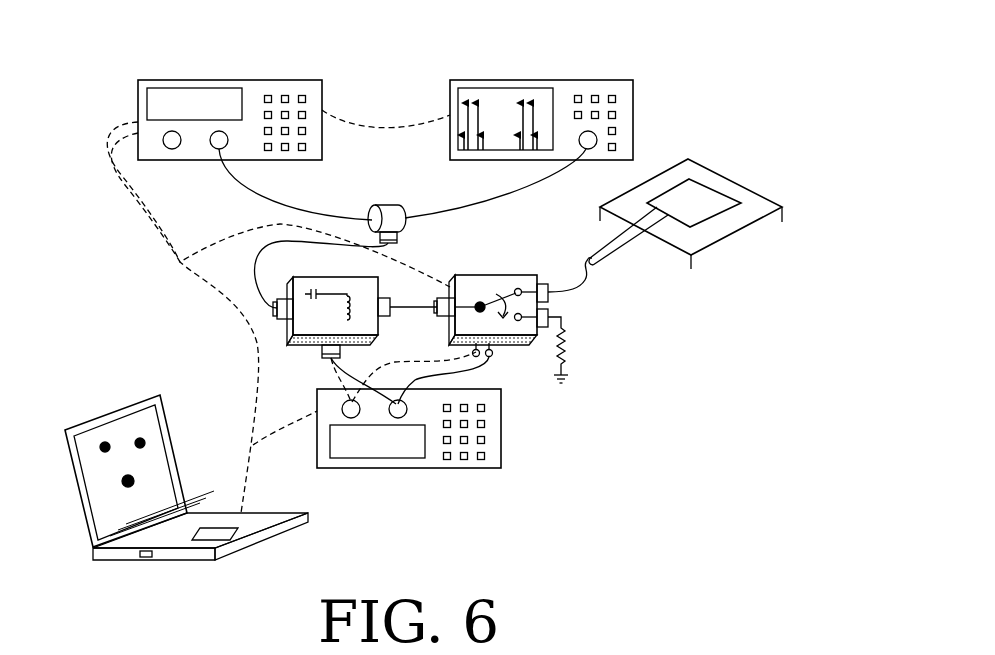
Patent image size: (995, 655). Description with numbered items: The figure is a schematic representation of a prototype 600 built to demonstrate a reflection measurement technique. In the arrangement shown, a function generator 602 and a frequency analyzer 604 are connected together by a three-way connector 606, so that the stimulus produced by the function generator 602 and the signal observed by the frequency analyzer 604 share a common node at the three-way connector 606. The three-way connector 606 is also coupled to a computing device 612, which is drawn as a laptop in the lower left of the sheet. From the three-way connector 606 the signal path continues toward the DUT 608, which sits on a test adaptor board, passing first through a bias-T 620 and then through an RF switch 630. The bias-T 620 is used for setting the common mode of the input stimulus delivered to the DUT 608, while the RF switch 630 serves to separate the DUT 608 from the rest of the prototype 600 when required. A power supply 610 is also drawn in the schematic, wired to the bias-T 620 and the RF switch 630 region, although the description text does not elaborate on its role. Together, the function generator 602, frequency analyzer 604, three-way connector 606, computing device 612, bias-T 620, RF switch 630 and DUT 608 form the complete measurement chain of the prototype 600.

The prototype 600 is at (72, 32).
The function generator 602 is at (138, 97).
The frequency analyzer 604 is at (633, 94).
The three-way connector 606 is at (382, 205).
The DUT 608 is at (752, 218).
The power supply 610 is at (501, 450).
The computing device 612 is at (152, 397).
The bias-T 620 is at (293, 346).
The RF switch 630 is at (527, 345).